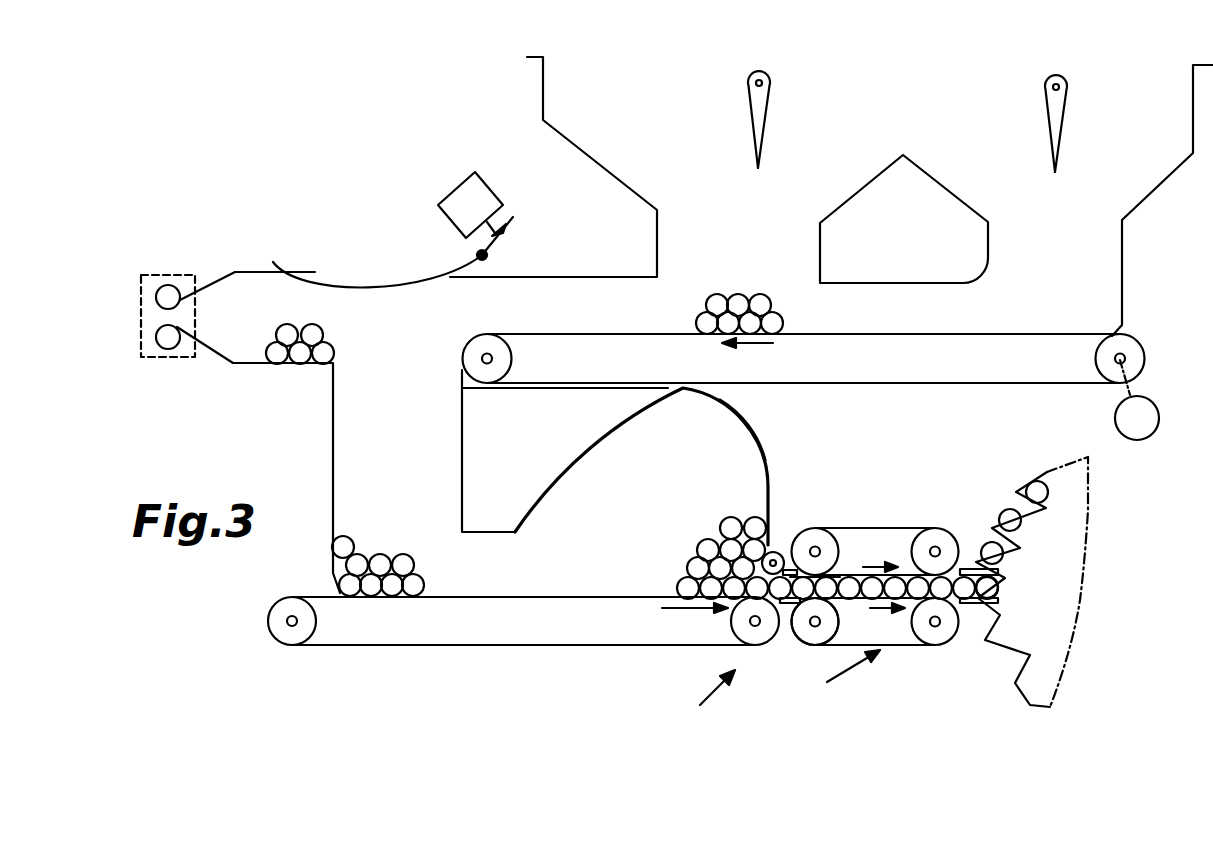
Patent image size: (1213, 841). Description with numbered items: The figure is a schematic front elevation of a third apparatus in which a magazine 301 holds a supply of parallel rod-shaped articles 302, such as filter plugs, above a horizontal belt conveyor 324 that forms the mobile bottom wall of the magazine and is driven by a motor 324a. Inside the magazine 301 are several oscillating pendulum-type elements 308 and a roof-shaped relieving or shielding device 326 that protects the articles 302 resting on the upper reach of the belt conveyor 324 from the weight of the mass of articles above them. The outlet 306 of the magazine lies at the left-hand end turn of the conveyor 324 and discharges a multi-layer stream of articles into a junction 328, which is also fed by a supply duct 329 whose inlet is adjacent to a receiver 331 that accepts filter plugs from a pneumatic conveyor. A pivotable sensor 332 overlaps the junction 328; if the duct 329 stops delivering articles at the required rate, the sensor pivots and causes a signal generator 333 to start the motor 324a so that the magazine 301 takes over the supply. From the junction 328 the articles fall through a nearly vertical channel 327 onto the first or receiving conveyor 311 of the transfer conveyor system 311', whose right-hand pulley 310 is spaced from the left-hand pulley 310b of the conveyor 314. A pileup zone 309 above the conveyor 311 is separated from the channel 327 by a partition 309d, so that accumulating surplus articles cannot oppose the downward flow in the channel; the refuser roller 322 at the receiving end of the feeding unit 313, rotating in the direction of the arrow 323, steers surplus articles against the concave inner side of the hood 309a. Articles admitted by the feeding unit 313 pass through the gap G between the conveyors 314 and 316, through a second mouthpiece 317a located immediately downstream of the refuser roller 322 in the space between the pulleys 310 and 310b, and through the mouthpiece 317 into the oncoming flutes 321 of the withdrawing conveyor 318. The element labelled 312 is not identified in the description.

The magazine 301 is at (970, 120).
The rod-shaped articles 302 is at (283, 332).
The outlet 306 is at (548, 300).
The pendulum-type elements 308 is at (758, 140).
The pileup zone 309 is at (752, 470).
The hood 309a is at (750, 425).
The partition 309d is at (522, 485).
The right-hand pulley 310 is at (730, 638).
The left-hand pulley 310b is at (838, 622).
The receiving conveyor 311 is at (511, 638).
The transfer conveyor system 311' is at (696, 696).
The conveying direction arrow 312 is at (670, 600).
The feeding unit 313 is at (833, 677).
The conveyor 314 is at (920, 510).
The conveyor 316 is at (893, 642).
The mouthpiece 317 is at (968, 570).
The second mouthpiece 317a is at (788, 604).
The withdrawing conveyor 318 is at (1052, 655).
The flutes 321 is at (983, 622).
The refuser roller 322 is at (773, 552).
The arrow 323 is at (710, 556).
The belt conveyor 324 is at (976, 376).
The motor 324a is at (1115, 420).
The relieving or shielding device 326 is at (872, 203).
The channel 327 is at (357, 442).
The junction 328 is at (424, 345).
The supply duct 329 is at (252, 288).
The receiver 331 is at (153, 282).
The sensor 332 is at (378, 287).
The signal generator 333 is at (467, 198).
The gap G is at (837, 577).